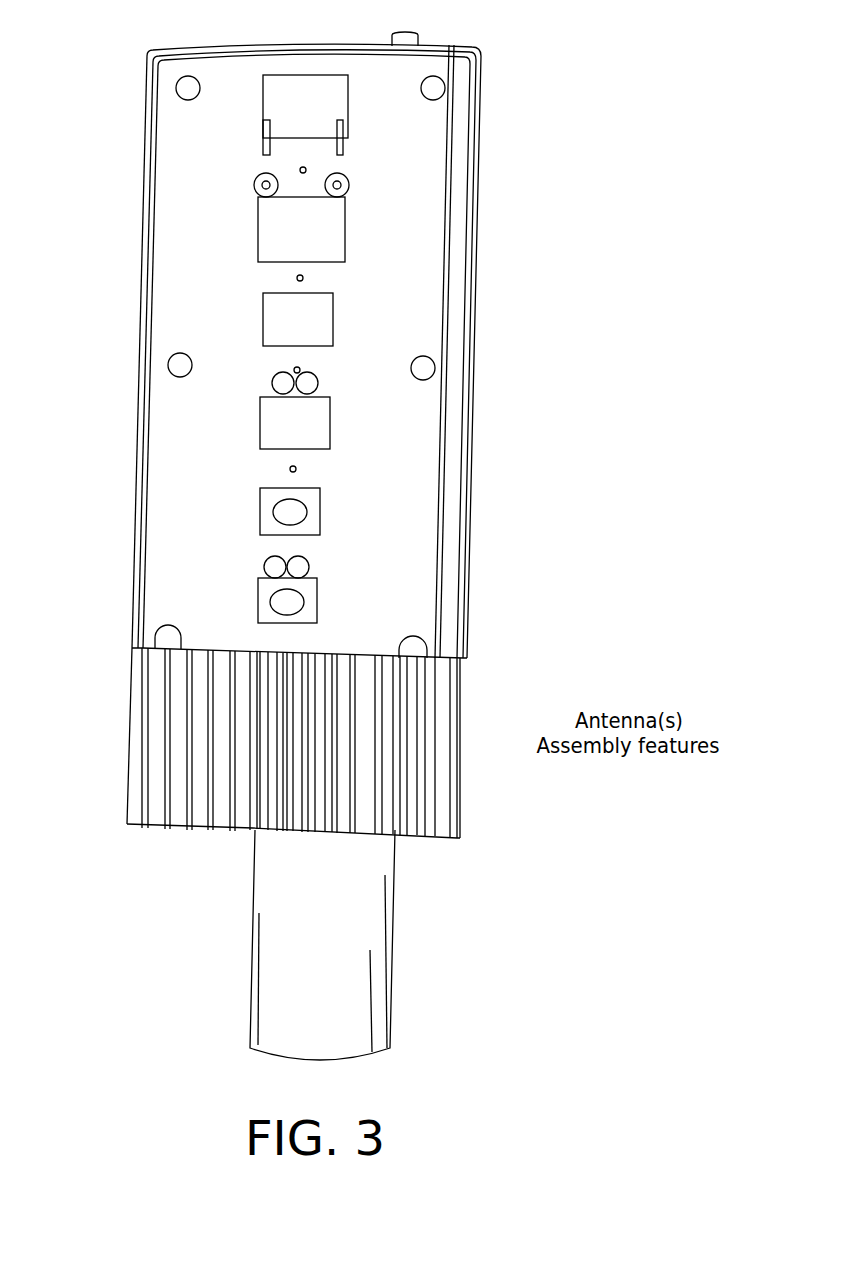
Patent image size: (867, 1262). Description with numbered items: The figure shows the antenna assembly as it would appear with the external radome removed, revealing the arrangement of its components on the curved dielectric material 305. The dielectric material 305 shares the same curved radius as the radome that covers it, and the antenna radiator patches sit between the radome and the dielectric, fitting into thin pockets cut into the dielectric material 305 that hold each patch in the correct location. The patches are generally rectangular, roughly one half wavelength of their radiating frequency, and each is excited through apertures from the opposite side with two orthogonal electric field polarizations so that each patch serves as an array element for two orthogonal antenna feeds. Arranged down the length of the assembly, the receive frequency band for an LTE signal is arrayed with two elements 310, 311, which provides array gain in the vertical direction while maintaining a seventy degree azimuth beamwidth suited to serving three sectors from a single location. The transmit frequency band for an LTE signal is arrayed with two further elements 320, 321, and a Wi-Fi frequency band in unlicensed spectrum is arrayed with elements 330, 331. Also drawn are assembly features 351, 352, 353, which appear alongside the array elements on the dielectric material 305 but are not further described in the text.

The dielectric material 305 is at (410, 158).
The receive band array element 310 is at (343, 107).
The receive band array element 311 is at (332, 245).
The transmit band array element 320 is at (333, 318).
The transmit band array element 321 is at (330, 438).
The Wi-Fi band array element 330 is at (313, 520).
The Wi-Fi band array element 331 is at (310, 610).
The screw bosses / assembly features 351 is at (347, 184).
The assembly features 352 is at (318, 383).
The assembly features 353 is at (310, 563).